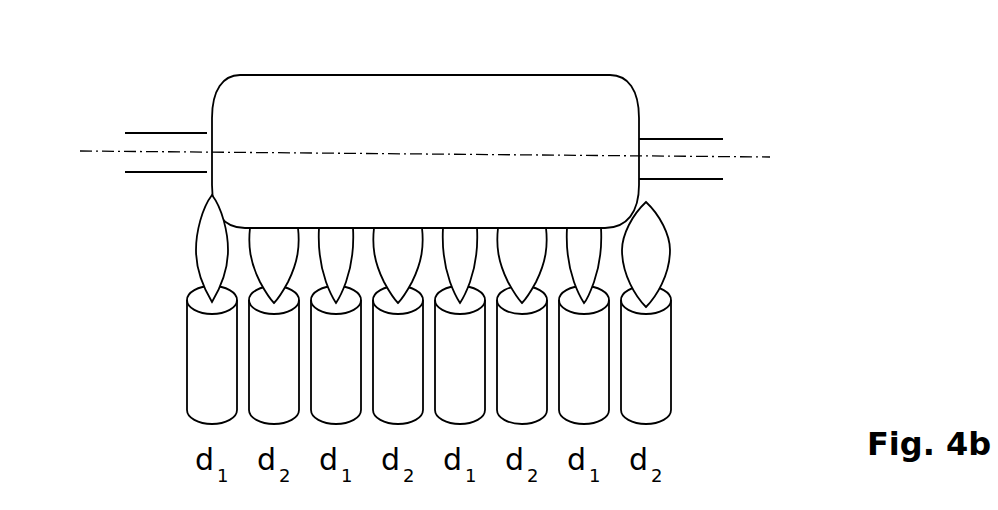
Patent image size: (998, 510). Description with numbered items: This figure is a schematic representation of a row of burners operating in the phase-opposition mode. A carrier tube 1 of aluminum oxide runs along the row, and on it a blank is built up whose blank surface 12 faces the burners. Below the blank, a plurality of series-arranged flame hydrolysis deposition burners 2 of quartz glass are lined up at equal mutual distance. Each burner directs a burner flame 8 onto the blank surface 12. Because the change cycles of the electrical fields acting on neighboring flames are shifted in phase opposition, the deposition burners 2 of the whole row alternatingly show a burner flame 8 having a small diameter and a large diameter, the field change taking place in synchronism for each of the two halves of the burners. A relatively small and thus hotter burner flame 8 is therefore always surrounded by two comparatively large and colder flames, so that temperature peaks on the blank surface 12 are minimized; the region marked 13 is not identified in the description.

The carrier tube 1 is at (681, 150).
The flame hydrolysis burners 2 is at (210, 350).
The burner flame 8 is at (203, 247).
The blank surface 12 is at (425, 126).
The roller surface 13 is at (577, 110).